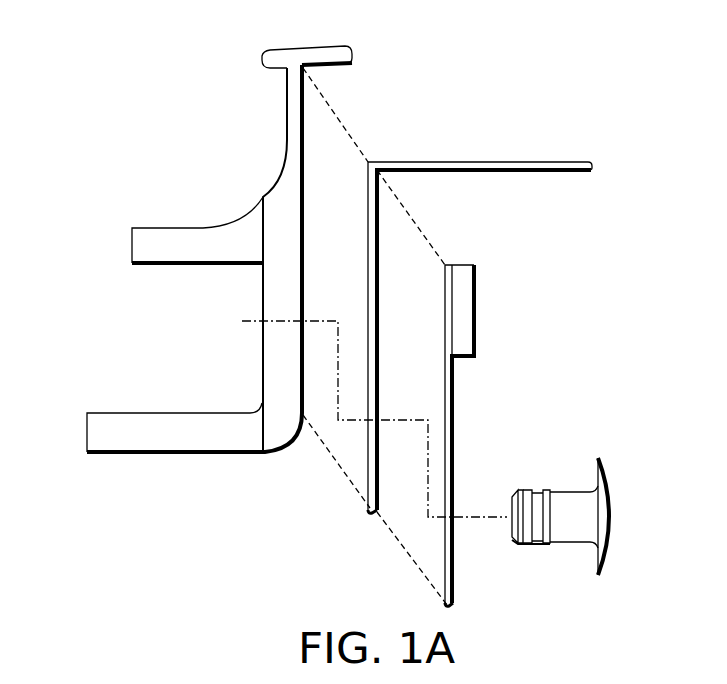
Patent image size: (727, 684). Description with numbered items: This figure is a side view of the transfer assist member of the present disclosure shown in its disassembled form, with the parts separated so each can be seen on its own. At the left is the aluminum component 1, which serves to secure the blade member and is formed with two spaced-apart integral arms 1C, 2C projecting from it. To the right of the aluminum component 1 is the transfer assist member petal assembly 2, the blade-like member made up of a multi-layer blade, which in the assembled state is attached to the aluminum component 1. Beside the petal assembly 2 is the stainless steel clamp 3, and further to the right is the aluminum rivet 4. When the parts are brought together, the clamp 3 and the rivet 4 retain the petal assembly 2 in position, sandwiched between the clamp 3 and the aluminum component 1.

The bracket 1 is at (195, 277).
The upper tab of bracket 1C is at (147, 247).
The lower tab of bracket 2C is at (97, 432).
The plate 2 is at (530, 162).
The block 3 is at (463, 323).
The screw 4 is at (608, 528).